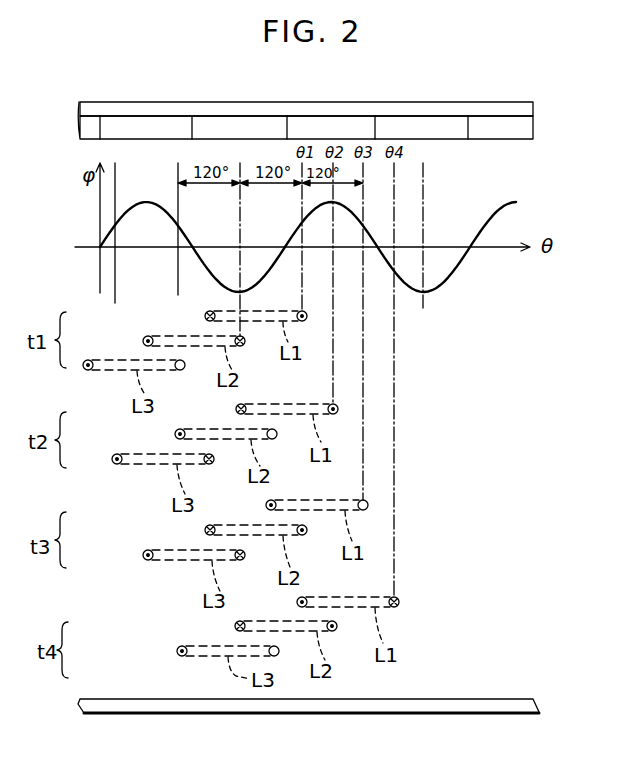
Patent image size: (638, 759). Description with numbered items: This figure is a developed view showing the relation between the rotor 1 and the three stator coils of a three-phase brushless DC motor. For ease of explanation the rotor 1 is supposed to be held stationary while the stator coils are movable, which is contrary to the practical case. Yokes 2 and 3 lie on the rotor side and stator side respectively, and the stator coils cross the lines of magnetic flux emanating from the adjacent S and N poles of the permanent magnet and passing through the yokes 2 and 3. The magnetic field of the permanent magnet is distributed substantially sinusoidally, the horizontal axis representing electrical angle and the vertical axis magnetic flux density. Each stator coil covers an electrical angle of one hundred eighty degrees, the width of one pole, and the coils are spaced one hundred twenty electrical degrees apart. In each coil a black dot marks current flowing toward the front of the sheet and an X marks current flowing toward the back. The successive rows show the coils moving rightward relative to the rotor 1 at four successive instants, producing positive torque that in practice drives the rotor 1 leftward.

The rotor 1 is at (522, 128).
The yoke on the rotor side 2 is at (522, 106).
The yoke on the stator side 3 is at (497, 697).